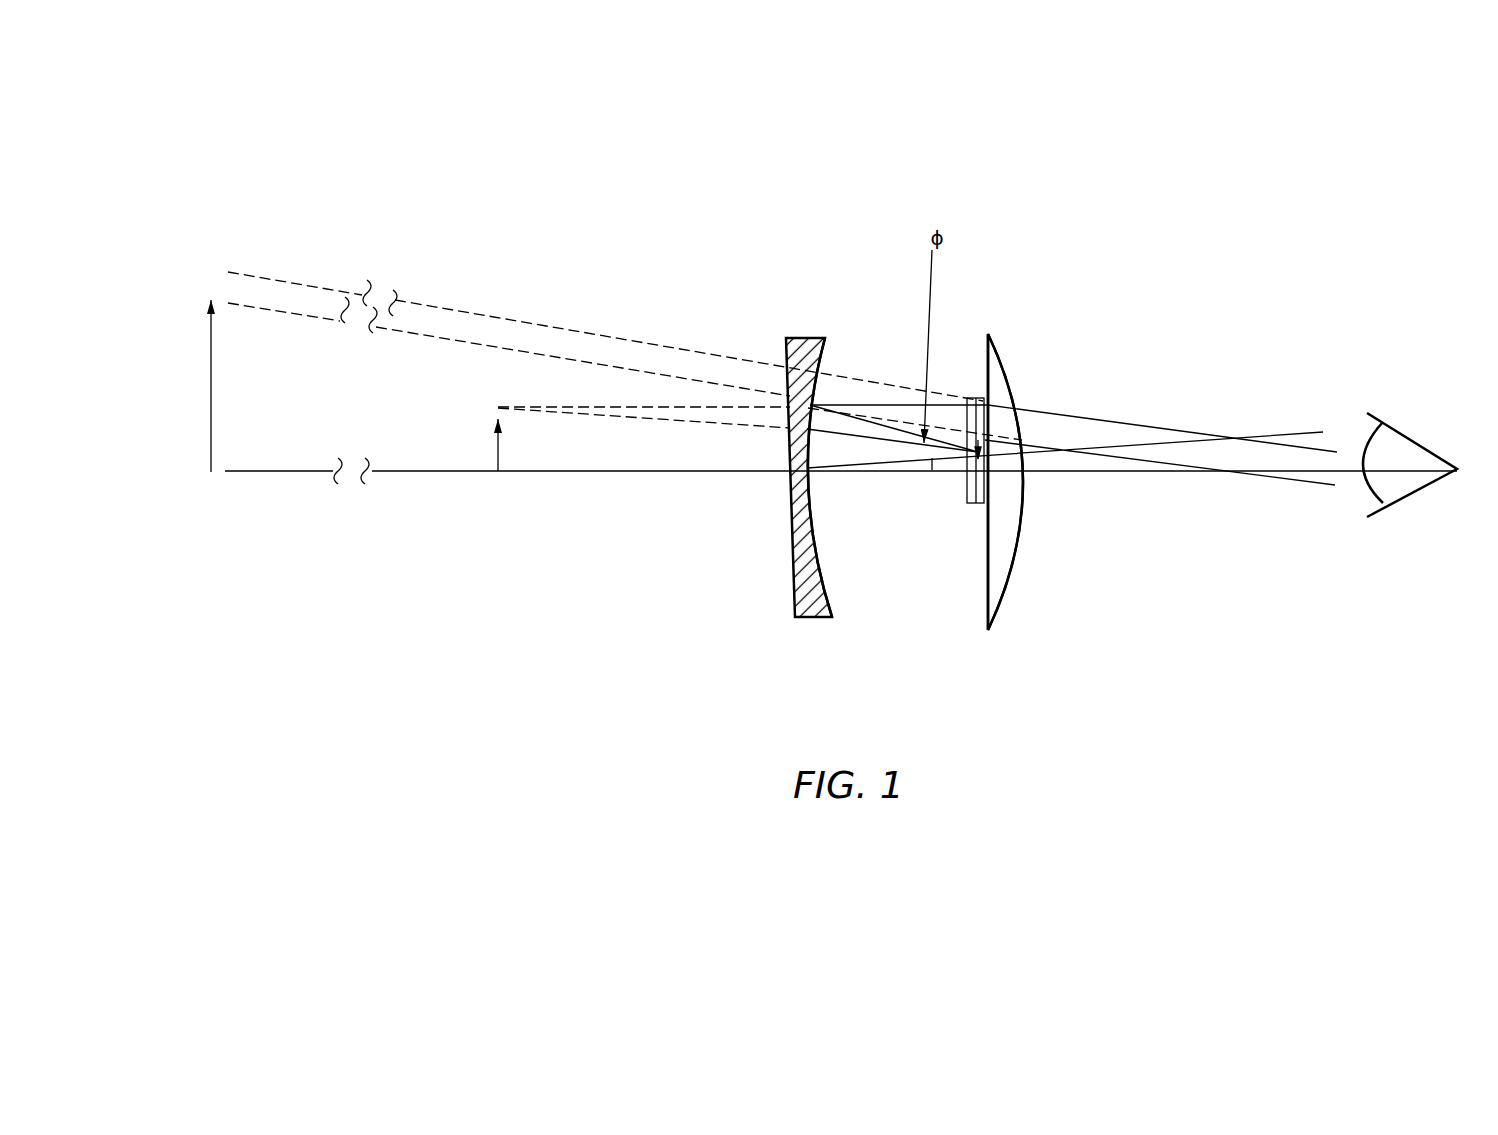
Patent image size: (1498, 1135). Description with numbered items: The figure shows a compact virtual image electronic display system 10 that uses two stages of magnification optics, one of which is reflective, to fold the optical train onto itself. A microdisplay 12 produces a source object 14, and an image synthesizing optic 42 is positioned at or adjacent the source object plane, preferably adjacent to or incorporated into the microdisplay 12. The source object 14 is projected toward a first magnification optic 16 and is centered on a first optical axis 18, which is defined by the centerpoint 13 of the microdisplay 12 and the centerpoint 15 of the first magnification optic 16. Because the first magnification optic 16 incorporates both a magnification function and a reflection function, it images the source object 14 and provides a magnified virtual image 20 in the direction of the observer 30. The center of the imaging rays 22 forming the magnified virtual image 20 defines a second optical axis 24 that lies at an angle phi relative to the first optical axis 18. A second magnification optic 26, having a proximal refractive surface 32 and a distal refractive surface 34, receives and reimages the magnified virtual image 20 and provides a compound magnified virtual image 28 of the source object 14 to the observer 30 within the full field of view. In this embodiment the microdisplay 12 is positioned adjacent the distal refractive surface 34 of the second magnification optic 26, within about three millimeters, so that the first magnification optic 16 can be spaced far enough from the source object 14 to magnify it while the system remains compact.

The virtual image electronic display system 10 is at (917, 667).
The microdisplay 12 is at (972, 507).
The centerpoint of microdisplay 13 is at (997, 478).
The source object 14 is at (972, 545).
The centerpoint of first magnification optic 15 is at (811, 474).
The first magnification optic 16 is at (807, 622).
The first optical axis 18 is at (550, 523).
The magnified virtual image 20 is at (490, 441).
The imaging rays 22 is at (838, 390).
The second optical axis 24 is at (858, 447).
The second magnification optic 26 is at (1003, 628).
The compound magnified virtual image 28 is at (198, 443).
The observer 30 is at (1422, 497).
The proximal refractive surface 32 is at (1013, 372).
The distal refractive surface 34 is at (980, 347).
The image synthesizing optic 42 is at (958, 482).